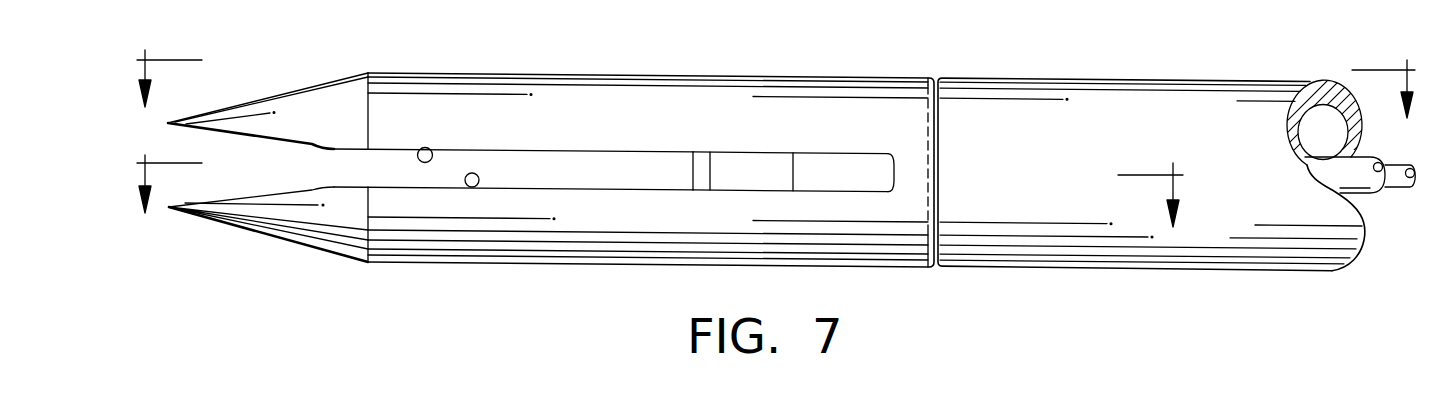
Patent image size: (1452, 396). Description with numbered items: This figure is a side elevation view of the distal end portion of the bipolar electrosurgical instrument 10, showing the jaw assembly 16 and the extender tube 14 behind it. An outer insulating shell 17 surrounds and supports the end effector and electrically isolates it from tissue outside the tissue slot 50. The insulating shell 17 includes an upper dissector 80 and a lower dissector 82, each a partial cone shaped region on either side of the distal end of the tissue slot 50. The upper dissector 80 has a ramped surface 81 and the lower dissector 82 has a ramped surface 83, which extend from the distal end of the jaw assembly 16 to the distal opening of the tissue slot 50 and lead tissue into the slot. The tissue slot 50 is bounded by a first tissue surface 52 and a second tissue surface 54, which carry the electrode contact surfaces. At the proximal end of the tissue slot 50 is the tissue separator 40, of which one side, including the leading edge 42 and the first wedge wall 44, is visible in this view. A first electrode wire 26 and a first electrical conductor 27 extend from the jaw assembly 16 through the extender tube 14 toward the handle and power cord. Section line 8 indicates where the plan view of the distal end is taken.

The section line 8— 8 is at (776, 64).
The bipolar electrosurgical instrument 10 is at (680, 203).
The extender tube 14 is at (1160, 137).
The jaw assembly 16 is at (505, 131).
The insulating shell 17 is at (607, 110).
The first electrode wire 26 is at (1342, 170).
The first electrical conductor 27 is at (1402, 188).
The tissue separator 40 is at (722, 201).
The leading edge 42 is at (692, 167).
The first wedge wall 44 is at (816, 165).
The tissue slot 50 is at (303, 166).
The first tissue surface 52 is at (413, 148).
The second tissue surface 54 is at (472, 187).
The upper dissector 80 is at (320, 107).
The ramped surface 81 is at (203, 131).
The lower dissector 82 is at (268, 220).
The ramped surface 83 is at (222, 199).